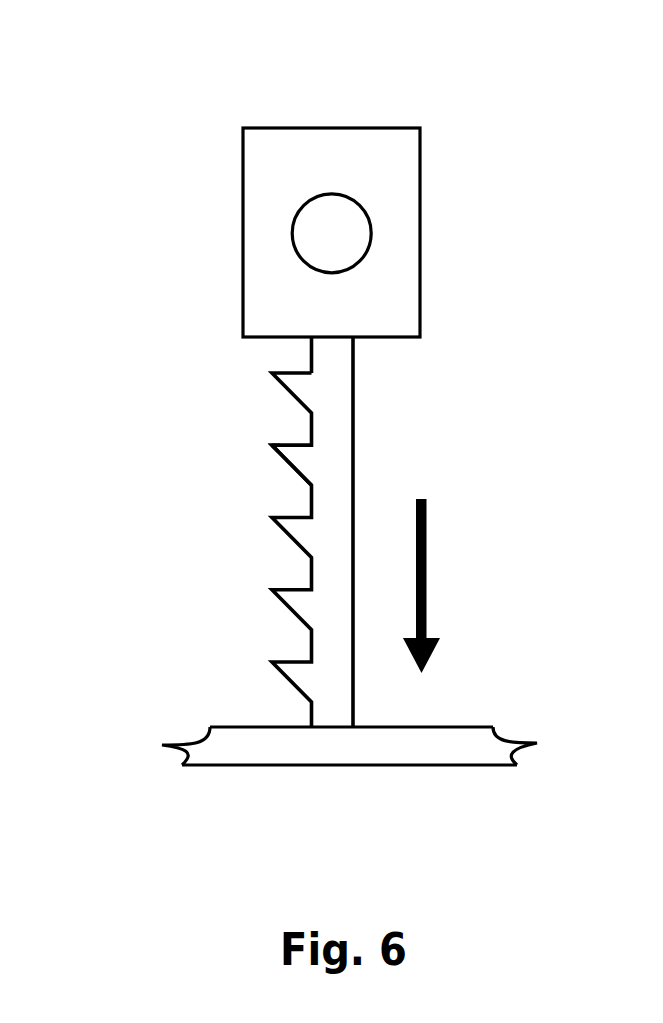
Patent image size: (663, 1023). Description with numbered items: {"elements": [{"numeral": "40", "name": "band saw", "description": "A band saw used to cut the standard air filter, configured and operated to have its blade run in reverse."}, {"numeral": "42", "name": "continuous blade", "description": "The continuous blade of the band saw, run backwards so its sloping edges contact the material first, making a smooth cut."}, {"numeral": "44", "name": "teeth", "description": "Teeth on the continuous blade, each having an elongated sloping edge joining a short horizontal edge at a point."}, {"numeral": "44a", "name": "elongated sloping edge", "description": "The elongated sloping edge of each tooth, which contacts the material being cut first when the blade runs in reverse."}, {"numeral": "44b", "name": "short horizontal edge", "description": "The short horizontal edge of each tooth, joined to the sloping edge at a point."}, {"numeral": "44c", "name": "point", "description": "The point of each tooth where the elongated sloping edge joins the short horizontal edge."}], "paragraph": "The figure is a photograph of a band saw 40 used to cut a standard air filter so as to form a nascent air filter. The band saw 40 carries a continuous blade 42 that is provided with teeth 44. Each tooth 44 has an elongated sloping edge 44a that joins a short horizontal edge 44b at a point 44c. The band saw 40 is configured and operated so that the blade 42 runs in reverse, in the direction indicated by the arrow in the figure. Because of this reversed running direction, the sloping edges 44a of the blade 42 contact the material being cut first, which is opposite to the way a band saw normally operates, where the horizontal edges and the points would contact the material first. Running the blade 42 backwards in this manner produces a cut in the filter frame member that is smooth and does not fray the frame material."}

The ratchet pawl device 40 is at (455, 147).
The stem / shaft 42 is at (340, 465).
The ratchet teeth 44 is at (259, 605).
The inclined tooth face 44a is at (288, 465).
The horizontal tooth face 44b is at (290, 443).
The tooth tip 44c is at (261, 442).